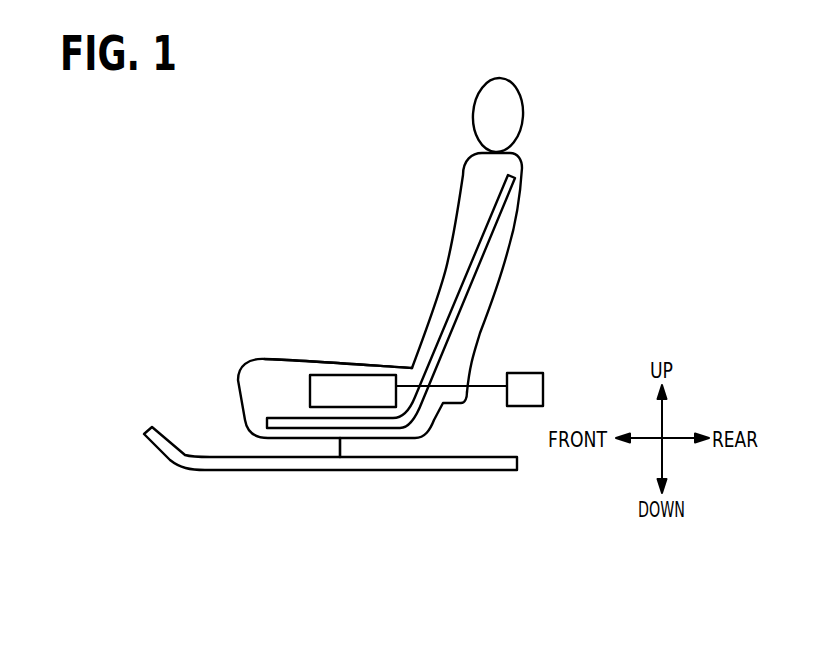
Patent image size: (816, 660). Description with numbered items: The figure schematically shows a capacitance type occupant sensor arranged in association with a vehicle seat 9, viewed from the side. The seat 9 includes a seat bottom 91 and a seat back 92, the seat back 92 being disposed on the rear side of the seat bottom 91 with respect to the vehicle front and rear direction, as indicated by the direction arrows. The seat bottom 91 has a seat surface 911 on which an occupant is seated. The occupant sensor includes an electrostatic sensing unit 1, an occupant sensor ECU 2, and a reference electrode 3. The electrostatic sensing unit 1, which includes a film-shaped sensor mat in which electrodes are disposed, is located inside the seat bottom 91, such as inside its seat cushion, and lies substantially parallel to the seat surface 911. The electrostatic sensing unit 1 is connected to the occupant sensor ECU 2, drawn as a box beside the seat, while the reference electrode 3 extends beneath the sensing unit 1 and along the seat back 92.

The electrostatic sensing unit 1 is at (310, 390).
The occupant sensor ECU 2 is at (543, 380).
The reference electrode 3 is at (267, 424).
The vehicle seat 9 is at (381, 257).
The seat bottom 91 is at (245, 392).
The seat back 92 is at (452, 262).
The seat surface 911 is at (307, 360).